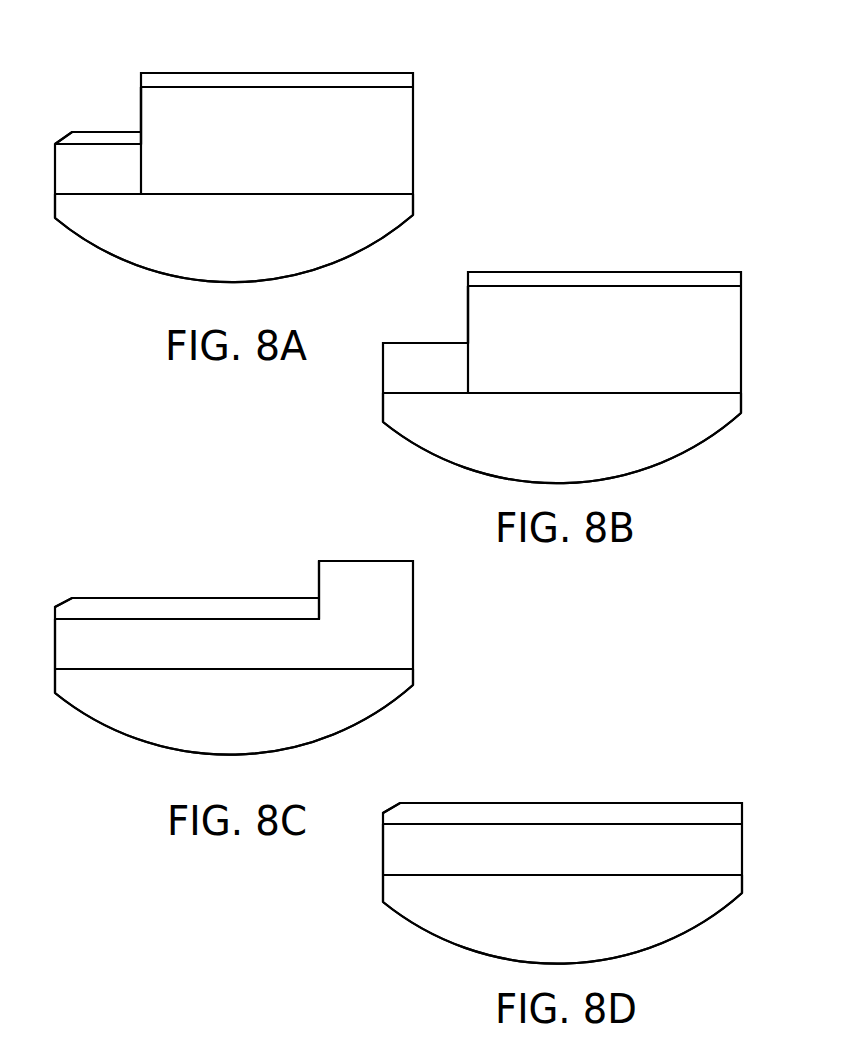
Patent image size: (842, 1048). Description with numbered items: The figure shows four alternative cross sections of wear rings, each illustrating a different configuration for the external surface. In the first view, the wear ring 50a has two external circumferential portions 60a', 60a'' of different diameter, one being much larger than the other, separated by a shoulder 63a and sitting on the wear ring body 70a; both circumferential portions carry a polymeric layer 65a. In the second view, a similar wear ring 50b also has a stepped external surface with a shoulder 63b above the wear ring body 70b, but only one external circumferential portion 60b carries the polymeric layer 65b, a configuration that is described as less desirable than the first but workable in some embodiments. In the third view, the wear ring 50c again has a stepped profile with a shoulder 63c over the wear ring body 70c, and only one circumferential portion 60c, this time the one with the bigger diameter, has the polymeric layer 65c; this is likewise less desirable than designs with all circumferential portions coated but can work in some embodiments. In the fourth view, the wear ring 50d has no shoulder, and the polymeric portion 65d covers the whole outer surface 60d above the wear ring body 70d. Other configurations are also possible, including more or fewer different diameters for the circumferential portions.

In FIG. 8A, the wear ring 50a is at (466, 134).
In FIG. 8A, the polymeric layer 65a is at (254, 80).
In FIG. 8A, the circumferential portion 60a' is at (285, 106).
In FIG. 8A, the circumferential portion 60a'' is at (81, 107).
In FIG. 8A, the shoulder 63a is at (141, 104).
In FIG. 8A, the wear ring body 70a is at (195, 194).
In FIG. 8B, the wear ring 50b is at (792, 333).
In FIG. 8B, the polymeric layer 65b is at (581, 280).
In FIG. 8B, the circumferential portion 60b is at (680, 285).
In FIG. 8B, the shoulder 63b is at (468, 302).
In FIG. 8B, the wear ring body 70b is at (523, 393).
In FIG. 8C, the wear ring 50c is at (450, 626).
In FIG. 8C, the polymeric layer 65c is at (100, 610).
In FIG. 8C, the circumferential portion 60c is at (220, 618).
In FIG. 8C, the shoulder 63c is at (318, 582).
In FIG. 8C, the wear ring body 70c is at (195, 669).
In FIG. 8D, the wear ring 50d is at (780, 831).
In FIG. 8D, the polymeric portion 65d is at (430, 815).
In FIG. 8D, the outer surface 60d is at (548, 823).
In FIG. 8D, the wear ring body 70d is at (525, 875).